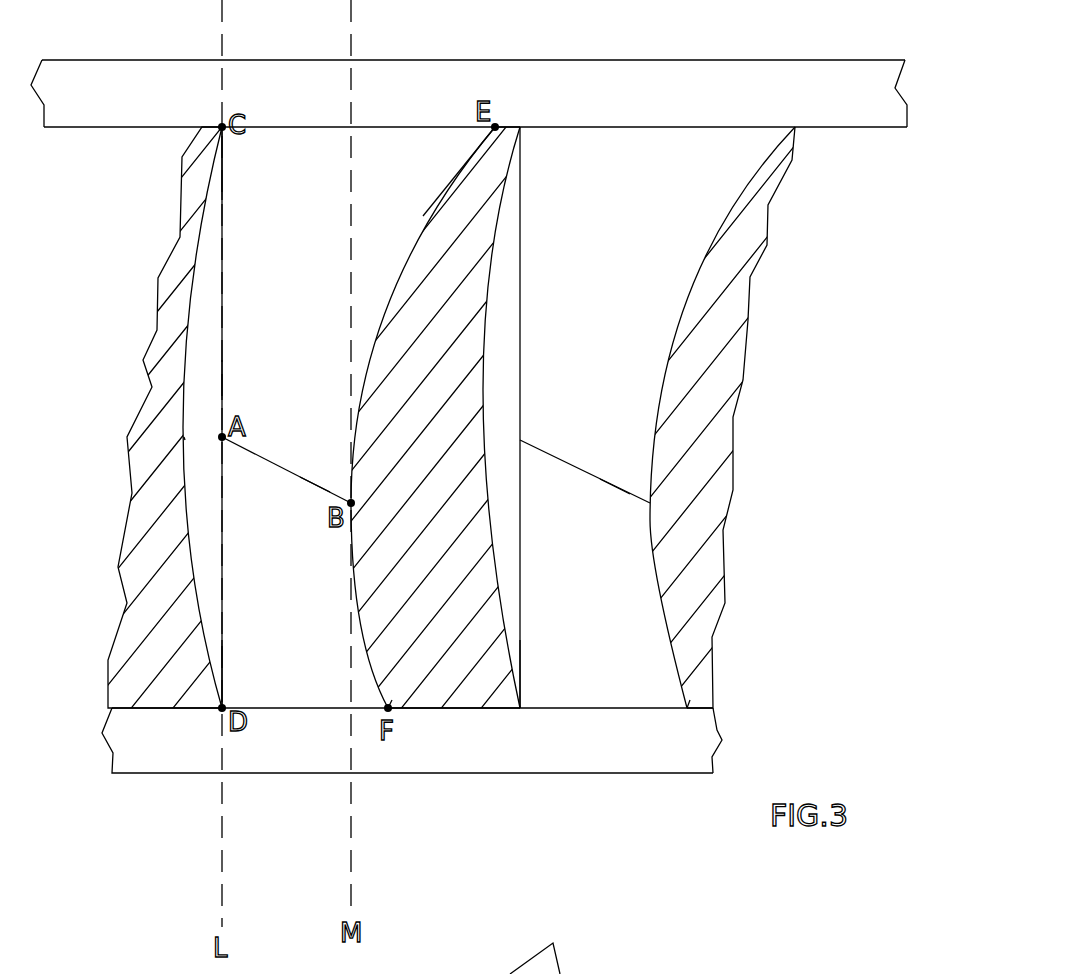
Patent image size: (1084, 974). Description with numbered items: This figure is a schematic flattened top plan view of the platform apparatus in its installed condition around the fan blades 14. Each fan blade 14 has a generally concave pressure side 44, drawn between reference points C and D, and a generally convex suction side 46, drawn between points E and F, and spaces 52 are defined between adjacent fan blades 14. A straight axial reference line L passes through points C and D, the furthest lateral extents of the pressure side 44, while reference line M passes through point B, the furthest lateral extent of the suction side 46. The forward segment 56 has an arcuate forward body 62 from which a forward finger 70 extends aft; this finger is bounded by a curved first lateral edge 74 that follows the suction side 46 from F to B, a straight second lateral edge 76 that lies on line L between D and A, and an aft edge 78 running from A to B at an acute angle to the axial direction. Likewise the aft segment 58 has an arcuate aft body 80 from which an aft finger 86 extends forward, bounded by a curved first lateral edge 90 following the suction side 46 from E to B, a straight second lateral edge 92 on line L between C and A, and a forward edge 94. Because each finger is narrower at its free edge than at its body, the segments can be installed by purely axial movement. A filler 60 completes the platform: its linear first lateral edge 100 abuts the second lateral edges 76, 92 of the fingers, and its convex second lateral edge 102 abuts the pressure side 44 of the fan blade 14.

The fan blade 14 is at (172, 617).
The pressure side 44 is at (198, 266).
The suction side 46 is at (422, 216).
The spaces 52 is at (285, 643).
The forward segment 56 is at (676, 779).
The aft segment 58 is at (814, 56).
The filler 60 is at (222, 308).
The forward body 62 is at (710, 752).
The forward finger 70 is at (302, 601).
The first lateral edge 74 is at (375, 668).
The second lateral edge 76 is at (221, 528).
The aft edge 78 is at (318, 488).
The aft body 80 is at (900, 107).
The aft finger 86 is at (306, 265).
The first lateral edge 90 is at (477, 151).
The second lateral edge 92 is at (222, 178).
The forward edge 94 is at (277, 468).
The first lateral edge 100 is at (224, 377).
The second lateral edge 102 is at (182, 437).